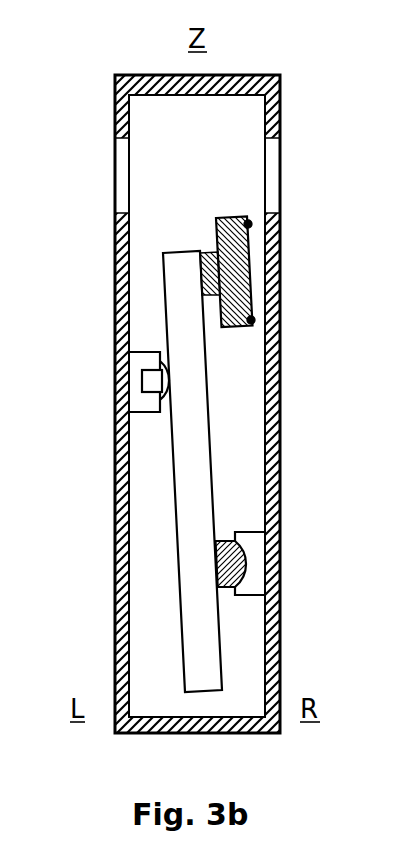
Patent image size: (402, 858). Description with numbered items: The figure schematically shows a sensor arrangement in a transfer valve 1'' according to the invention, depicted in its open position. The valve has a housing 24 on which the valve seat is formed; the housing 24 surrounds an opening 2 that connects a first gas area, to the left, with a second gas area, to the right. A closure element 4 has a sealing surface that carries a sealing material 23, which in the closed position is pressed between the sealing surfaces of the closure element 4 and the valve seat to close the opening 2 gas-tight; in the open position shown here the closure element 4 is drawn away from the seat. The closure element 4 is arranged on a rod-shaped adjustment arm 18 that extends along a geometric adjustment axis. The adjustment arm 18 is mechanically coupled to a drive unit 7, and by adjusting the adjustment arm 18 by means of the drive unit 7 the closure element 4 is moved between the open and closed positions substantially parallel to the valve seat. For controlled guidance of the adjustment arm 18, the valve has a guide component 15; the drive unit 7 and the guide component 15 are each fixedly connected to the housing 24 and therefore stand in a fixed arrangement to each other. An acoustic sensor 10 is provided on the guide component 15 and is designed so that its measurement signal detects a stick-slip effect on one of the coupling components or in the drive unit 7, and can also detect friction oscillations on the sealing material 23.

The transfer valve 1'' is at (156, 378).
The opening 2 is at (267, 182).
The housing 24 is at (273, 125).
The sealing material 23 is at (250, 225).
The closure element 4 is at (237, 278).
The adjustment arm 18 is at (195, 363).
The guide component 15 is at (137, 363).
The acoustic sensor 10 is at (145, 382).
The drive unit 7 is at (252, 575).